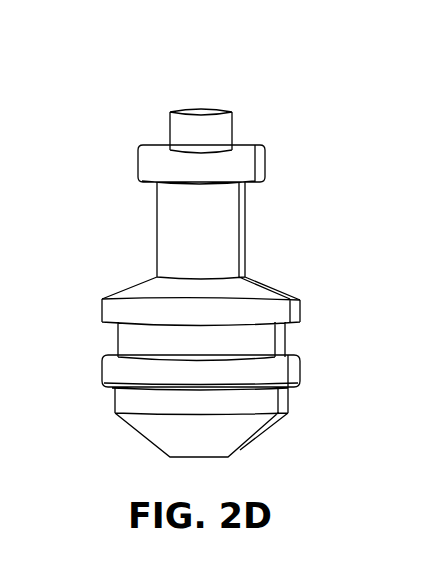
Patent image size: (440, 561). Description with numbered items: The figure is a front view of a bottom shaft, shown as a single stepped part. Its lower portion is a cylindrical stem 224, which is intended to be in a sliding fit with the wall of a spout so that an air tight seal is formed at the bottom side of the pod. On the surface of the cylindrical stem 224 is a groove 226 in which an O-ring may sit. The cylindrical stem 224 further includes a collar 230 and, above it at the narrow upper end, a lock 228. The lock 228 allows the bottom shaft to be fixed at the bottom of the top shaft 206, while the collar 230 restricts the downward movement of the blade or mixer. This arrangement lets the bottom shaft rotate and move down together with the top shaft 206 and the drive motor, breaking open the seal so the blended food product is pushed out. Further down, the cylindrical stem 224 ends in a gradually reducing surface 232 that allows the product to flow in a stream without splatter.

The top shaft 206 is at (144, 80).
The lock 228 is at (230, 121).
The collar 230 is at (243, 160).
The groove 226 is at (283, 330).
The cylindrical stem 224 is at (300, 367).
The gradually reducing surface 232 is at (244, 441).